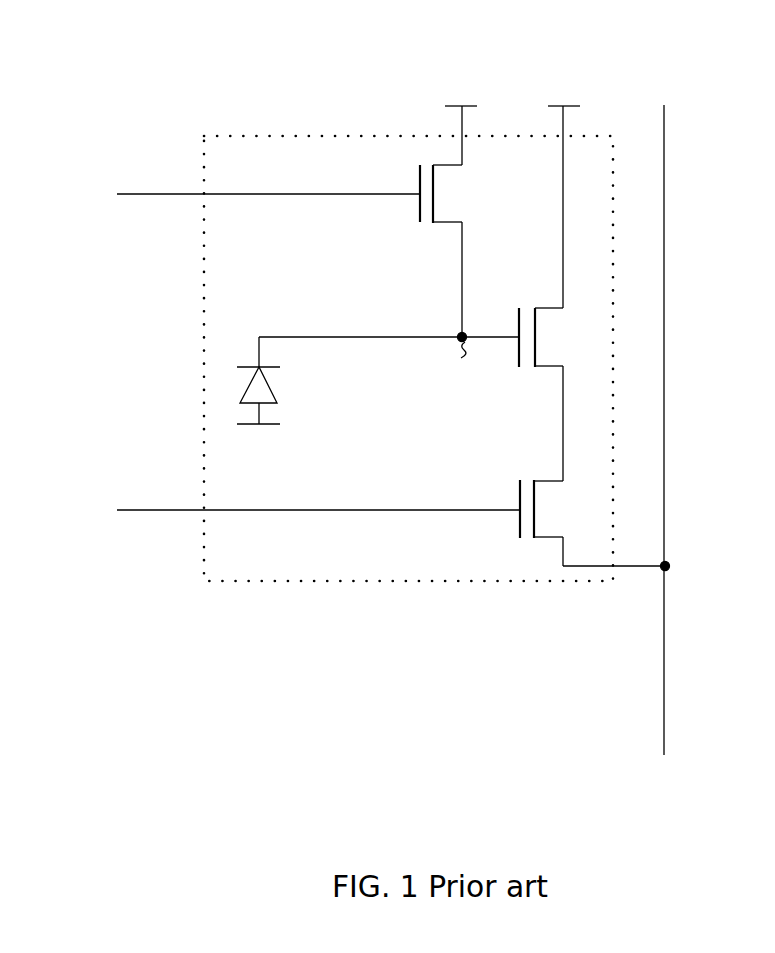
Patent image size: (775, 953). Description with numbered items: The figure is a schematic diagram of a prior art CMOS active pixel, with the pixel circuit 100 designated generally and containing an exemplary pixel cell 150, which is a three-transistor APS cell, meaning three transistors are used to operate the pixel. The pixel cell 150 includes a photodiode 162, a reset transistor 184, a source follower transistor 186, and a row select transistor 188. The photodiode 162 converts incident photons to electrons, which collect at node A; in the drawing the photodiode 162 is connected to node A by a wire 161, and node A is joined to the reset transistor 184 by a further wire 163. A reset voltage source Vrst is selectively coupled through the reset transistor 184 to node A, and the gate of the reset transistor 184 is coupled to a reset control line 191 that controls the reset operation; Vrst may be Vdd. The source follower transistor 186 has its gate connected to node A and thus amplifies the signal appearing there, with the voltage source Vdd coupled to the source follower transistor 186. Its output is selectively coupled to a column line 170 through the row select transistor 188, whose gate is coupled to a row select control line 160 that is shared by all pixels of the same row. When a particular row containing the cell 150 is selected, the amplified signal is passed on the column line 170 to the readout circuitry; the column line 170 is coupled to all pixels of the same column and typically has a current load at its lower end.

The pixel circuit 100 is at (507, 35).
The pixel cell 150 is at (290, 573).
The reset control line 191 is at (240, 193).
The reset transistor 184 is at (437, 196).
The floating diffusion node line 163 is at (463, 279).
The photodiode connection line 161 is at (333, 337).
The photodiode 162 is at (273, 392).
The source follower transistor 186 is at (536, 338).
The row select control line 160 is at (400, 510).
The row select transistor 188 is at (536, 510).
The column line 170 is at (665, 291).